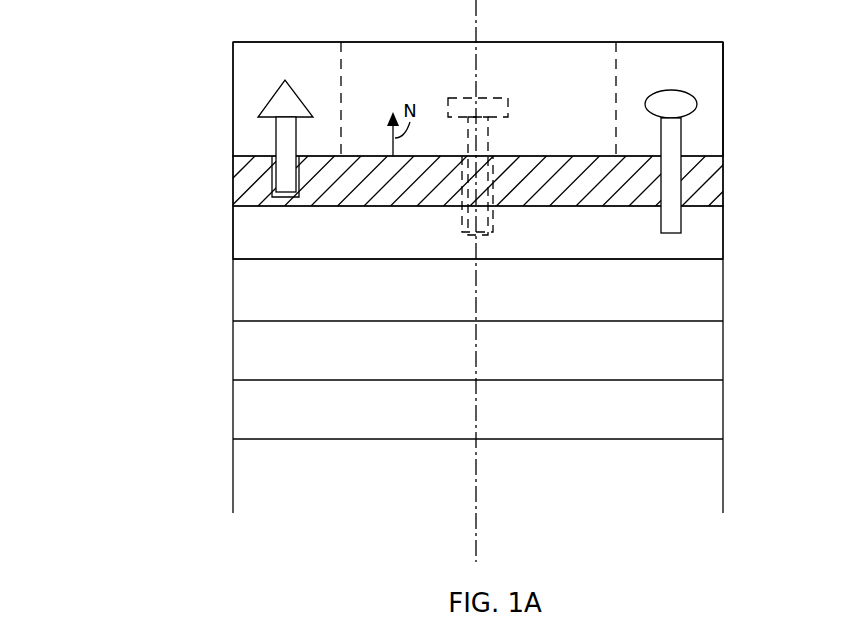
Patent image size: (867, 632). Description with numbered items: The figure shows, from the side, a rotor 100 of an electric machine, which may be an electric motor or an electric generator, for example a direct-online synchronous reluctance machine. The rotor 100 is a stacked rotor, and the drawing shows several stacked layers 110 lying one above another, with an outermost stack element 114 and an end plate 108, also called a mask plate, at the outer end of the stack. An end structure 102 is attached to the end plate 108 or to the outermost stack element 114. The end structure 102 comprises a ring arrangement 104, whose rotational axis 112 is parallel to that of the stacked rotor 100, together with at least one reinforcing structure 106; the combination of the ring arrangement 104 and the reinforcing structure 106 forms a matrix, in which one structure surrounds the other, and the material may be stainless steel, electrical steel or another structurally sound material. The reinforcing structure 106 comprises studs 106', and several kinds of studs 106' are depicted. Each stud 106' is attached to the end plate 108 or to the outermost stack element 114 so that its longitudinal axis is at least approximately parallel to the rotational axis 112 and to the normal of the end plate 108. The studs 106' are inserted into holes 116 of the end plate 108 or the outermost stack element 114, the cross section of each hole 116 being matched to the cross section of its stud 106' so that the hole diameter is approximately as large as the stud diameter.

The rotor 100 is at (150, 270).
The end structure 102 is at (207, 84).
The ring arrangement 104 is at (723, 80).
The reinforcing structure 106 is at (492, 60).
The stud 106' is at (478, 188).
The end plate 108 is at (723, 180).
The stacked layers 110 is at (543, 303).
The rotational axis 112 is at (476, 487).
The stack element 114 is at (543, 250).
The hole 116 is at (273, 175).